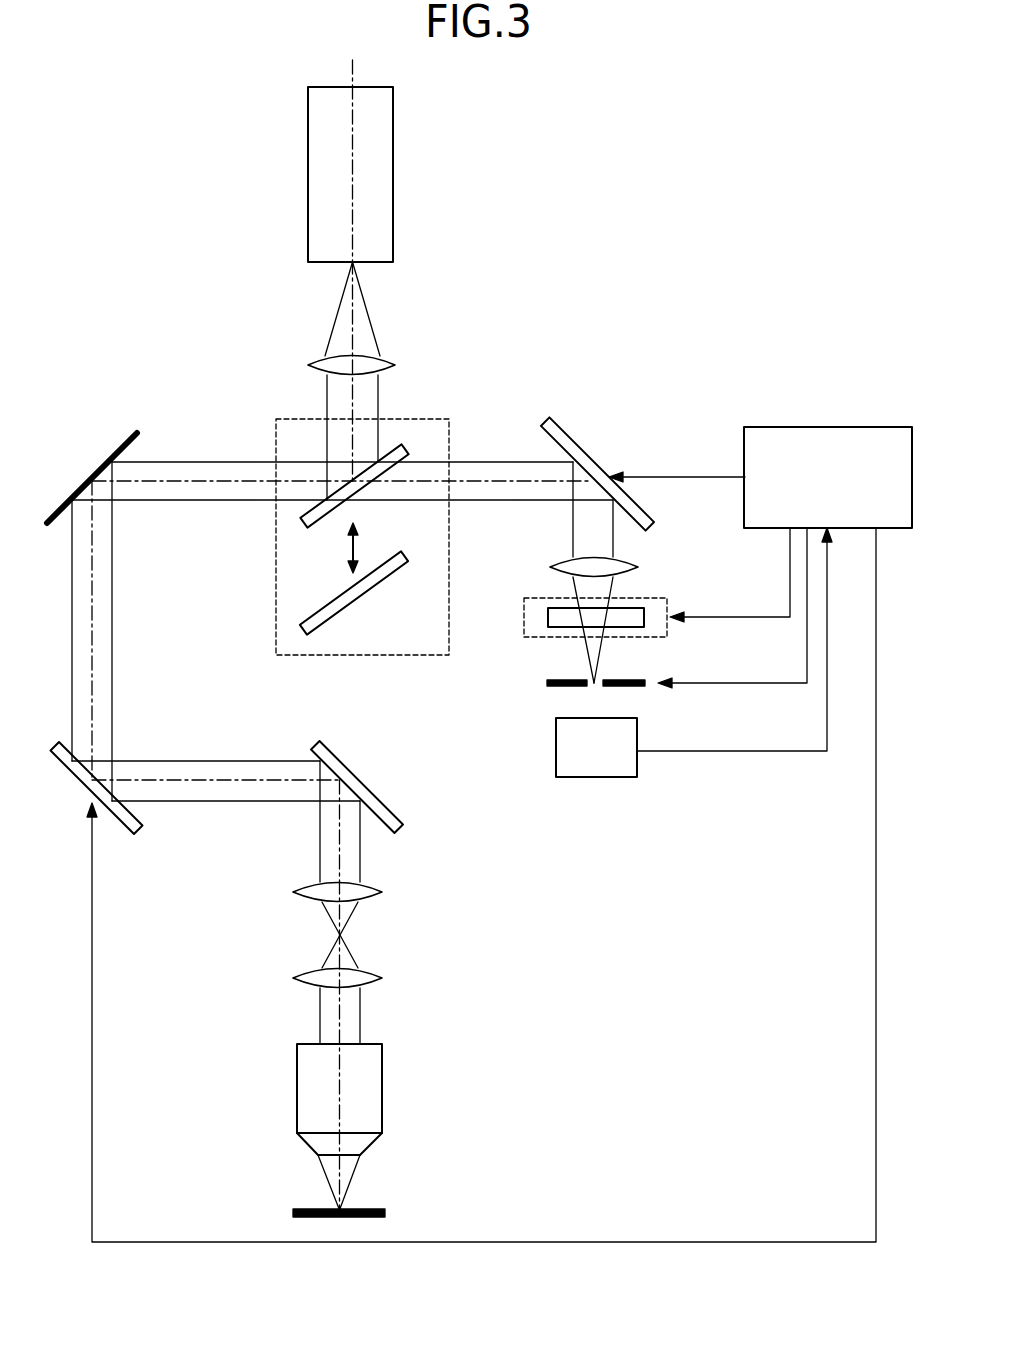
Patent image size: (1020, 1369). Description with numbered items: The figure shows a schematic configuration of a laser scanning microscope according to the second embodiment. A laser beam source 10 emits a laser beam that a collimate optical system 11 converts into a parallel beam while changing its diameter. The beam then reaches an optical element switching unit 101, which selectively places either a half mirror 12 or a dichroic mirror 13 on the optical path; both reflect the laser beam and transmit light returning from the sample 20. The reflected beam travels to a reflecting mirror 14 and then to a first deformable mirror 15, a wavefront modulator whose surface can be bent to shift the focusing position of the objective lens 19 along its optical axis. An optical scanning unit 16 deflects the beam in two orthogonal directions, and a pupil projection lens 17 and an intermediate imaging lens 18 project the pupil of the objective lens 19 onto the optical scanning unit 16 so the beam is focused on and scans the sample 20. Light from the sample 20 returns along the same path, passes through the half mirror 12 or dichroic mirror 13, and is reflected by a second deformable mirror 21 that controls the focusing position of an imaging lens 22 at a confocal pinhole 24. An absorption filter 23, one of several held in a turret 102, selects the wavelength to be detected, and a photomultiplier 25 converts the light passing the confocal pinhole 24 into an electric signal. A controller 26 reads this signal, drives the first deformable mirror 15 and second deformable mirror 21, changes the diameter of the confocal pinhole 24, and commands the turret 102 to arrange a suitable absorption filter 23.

The laser beam source 10 is at (389, 199).
The collimate optical system 11 is at (396, 364).
The half mirror 12 is at (401, 451).
The dichroic mirror 13 is at (405, 560).
The reflecting mirror 14 is at (88, 472).
The first deformable mirror 15 is at (62, 776).
The optical scanning unit 16 is at (365, 781).
The pupil projection lens 17 is at (384, 889).
The intermediate imaging lens 18 is at (384, 975).
The objective lens 19 is at (370, 1092).
The sample 20 is at (363, 1210).
The second deformable mirror 21 is at (584, 444).
The imaging lens 22 is at (639, 566).
The absorption filter 23 is at (555, 618).
The confocal pinhole 24 is at (560, 690).
The photomultiplier 25 is at (596, 770).
The controller 26 is at (857, 427).
The optical element switching unit 101 is at (288, 426).
The turret 102 is at (661, 608).